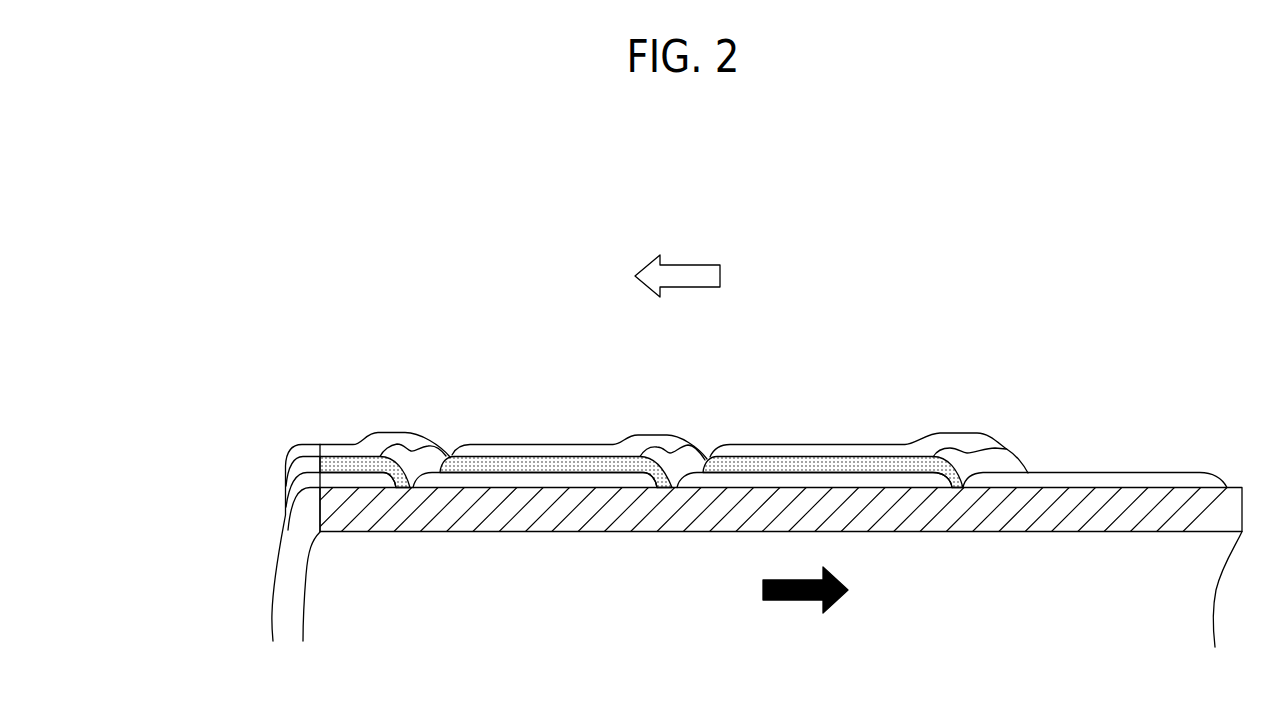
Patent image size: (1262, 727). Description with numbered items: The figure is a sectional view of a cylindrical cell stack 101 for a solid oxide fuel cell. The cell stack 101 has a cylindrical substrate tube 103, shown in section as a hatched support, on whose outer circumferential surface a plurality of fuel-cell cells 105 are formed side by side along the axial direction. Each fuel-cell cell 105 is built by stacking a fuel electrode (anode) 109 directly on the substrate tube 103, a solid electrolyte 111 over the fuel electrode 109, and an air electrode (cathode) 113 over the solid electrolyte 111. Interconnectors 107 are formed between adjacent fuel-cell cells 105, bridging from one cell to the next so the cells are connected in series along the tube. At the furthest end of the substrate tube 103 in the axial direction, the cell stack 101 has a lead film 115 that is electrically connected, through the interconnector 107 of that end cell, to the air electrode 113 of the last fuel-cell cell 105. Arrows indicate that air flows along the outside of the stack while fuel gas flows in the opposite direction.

The cell stack 101 is at (443, 335).
The substrate tube 103 is at (1190, 500).
The fuel-cell cell 105 is at (163, 422).
The interconnector 107 is at (407, 458).
The fuel electrode (anode) 109 is at (291, 507).
The solid electrolyte 111 is at (292, 480).
The air electrode (cathode) 113 is at (293, 459).
The lead film 115 is at (1073, 472).